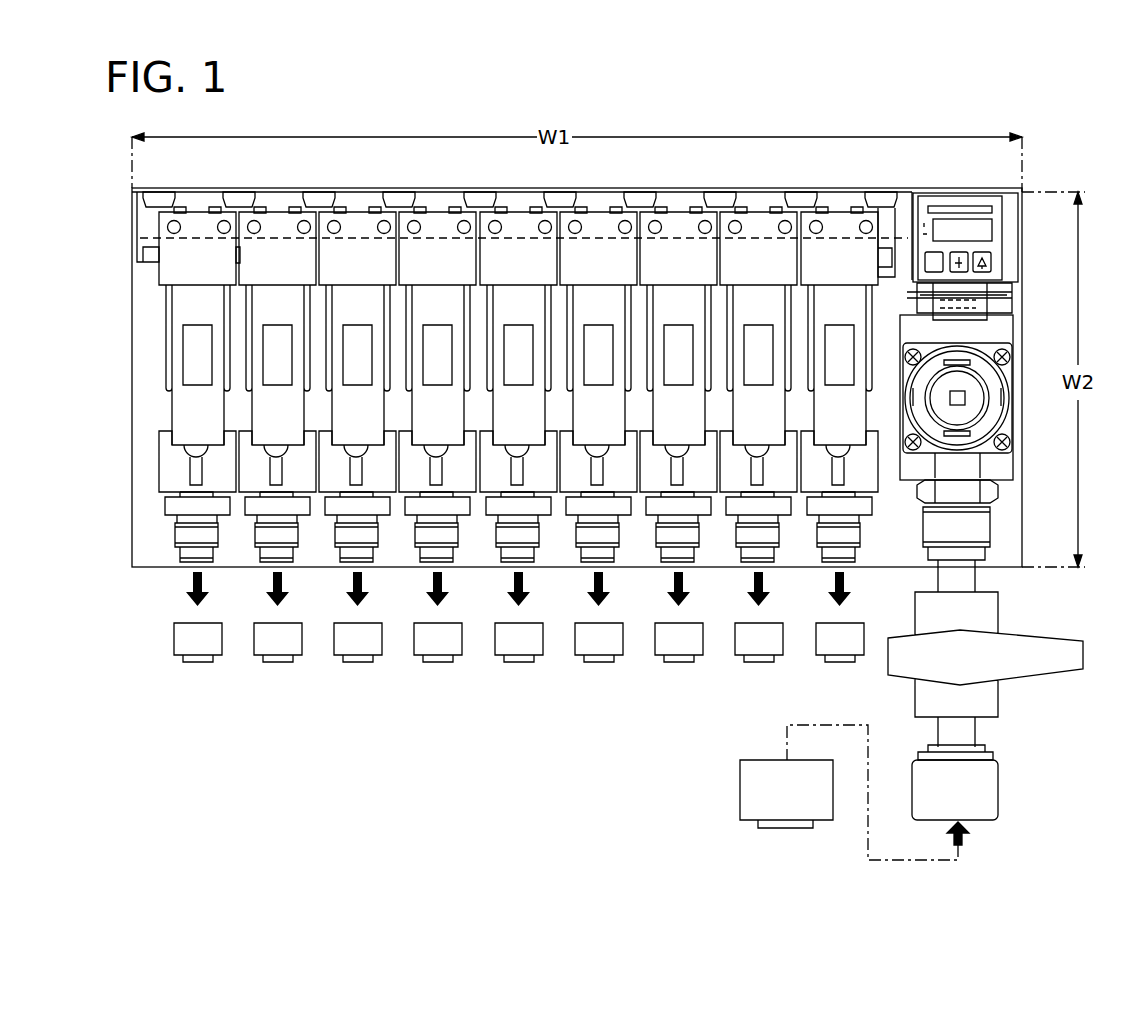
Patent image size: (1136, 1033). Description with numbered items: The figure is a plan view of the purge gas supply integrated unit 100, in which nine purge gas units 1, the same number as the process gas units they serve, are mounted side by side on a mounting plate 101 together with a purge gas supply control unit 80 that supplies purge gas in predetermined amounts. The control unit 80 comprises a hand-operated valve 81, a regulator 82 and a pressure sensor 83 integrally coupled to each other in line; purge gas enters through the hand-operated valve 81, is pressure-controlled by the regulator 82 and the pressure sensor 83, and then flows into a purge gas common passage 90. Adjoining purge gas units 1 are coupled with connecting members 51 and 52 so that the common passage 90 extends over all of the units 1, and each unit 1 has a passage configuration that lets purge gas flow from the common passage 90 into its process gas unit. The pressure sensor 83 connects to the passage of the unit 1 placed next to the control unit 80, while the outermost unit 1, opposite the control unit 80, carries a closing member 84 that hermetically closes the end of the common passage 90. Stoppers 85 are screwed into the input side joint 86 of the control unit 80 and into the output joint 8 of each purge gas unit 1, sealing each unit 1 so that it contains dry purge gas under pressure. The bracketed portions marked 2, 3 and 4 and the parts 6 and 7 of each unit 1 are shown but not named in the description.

The purge gas unit 1 is at (527, 384).
The valve unit upper portion 2 is at (833, 203).
The valve unit main body 3 is at (847, 223).
The valve assembly 4 is at (884, 166).
The valve block 6 is at (873, 484).
The valve body 7 is at (848, 307).
The output joint 8 is at (856, 540).
The connecting member 51 is at (885, 198).
The connecting member 52 is at (242, 256).
The purge gas supply control unit 80 is at (1023, 732).
The hand-operated valve 81 is at (993, 612).
The regulator 82 is at (986, 410).
The pressure sensor 83 is at (988, 240).
The closing member 84 is at (137, 232).
The stopper 85 is at (188, 651).
The input side joint 86 is at (988, 770).
The purge gas common passage 90 is at (438, 222).
The integrated unit 100 is at (1086, 147).
The mounting plate 101 is at (1008, 528).